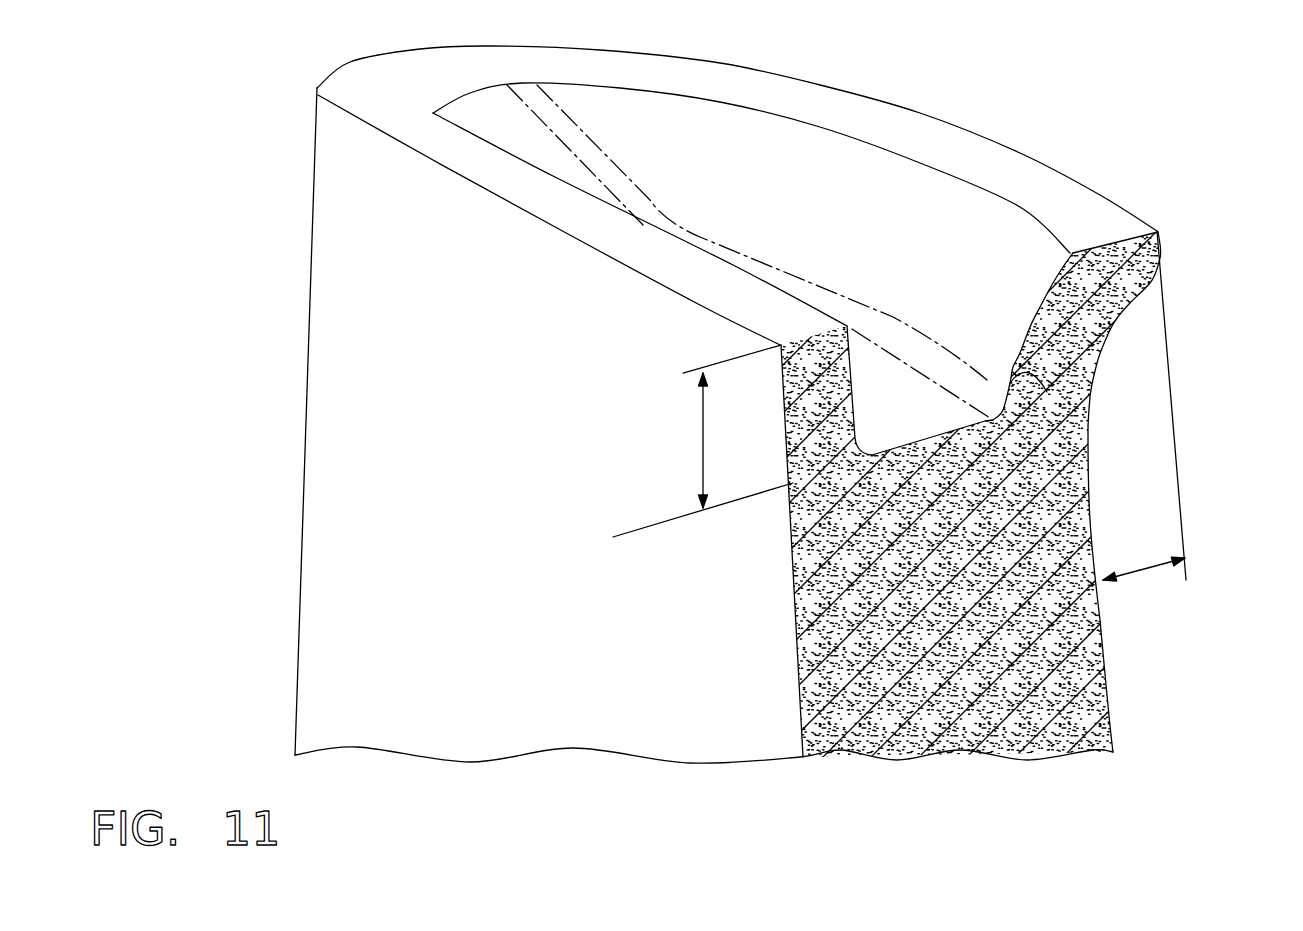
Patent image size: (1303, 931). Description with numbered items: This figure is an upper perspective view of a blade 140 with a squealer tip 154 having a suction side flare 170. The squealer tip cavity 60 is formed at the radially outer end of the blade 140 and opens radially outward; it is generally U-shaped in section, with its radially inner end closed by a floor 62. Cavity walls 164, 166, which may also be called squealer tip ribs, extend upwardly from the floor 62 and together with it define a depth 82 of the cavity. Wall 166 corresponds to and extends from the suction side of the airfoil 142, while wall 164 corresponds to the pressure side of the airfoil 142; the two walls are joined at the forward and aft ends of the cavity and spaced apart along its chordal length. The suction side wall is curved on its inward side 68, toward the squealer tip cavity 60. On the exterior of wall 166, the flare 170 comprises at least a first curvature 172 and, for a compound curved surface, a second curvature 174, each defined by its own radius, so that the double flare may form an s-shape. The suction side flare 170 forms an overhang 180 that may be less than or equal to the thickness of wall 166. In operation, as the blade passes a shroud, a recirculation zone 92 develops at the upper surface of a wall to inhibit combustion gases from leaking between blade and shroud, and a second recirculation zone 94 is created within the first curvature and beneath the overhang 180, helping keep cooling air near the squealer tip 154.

The squealer tip cavity 60 is at (866, 271).
The floor 62 is at (898, 394).
The inward side 68 is at (1050, 330).
The depth 82 is at (703, 433).
The recirculation zone 92 is at (884, 110).
The second recirculation zone 94 is at (1186, 344).
The blade 140 is at (1082, 104).
The airfoil 142 is at (712, 569).
The squealer tip 154 is at (312, 136).
The cavity wall 164 is at (630, 247).
The cavity wall 166 is at (1007, 387).
The suction side flare 170 is at (1162, 180).
The first curvature 172 is at (1130, 393).
The second curvature 174 is at (1165, 271).
The overhang 180 is at (1142, 570).